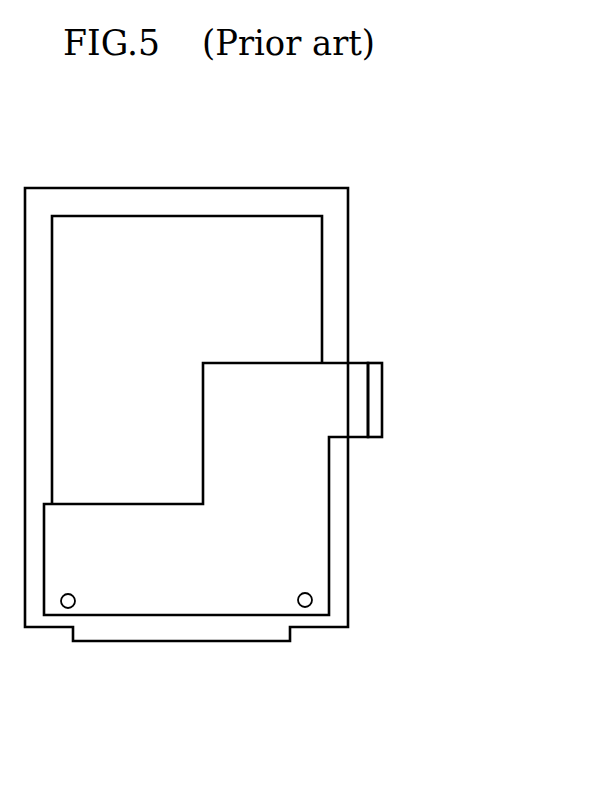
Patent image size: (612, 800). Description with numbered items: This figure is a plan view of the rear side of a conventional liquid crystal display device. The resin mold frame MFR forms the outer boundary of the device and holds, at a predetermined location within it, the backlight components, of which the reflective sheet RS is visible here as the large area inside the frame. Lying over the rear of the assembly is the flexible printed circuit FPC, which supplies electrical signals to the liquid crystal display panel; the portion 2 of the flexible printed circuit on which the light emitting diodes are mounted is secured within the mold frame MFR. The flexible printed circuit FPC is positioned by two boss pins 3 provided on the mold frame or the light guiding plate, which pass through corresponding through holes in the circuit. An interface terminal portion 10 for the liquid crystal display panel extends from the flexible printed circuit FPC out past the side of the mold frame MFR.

The reflective sheet RS is at (230, 253).
The mold frame MFR is at (332, 251).
The flexible printed circuit FPC is at (292, 509).
The interface terminal portion 10 is at (375, 397).
The boss pins 3 is at (186, 657).
The portion on which light emitting diodes are mounted 2 is at (186, 586).